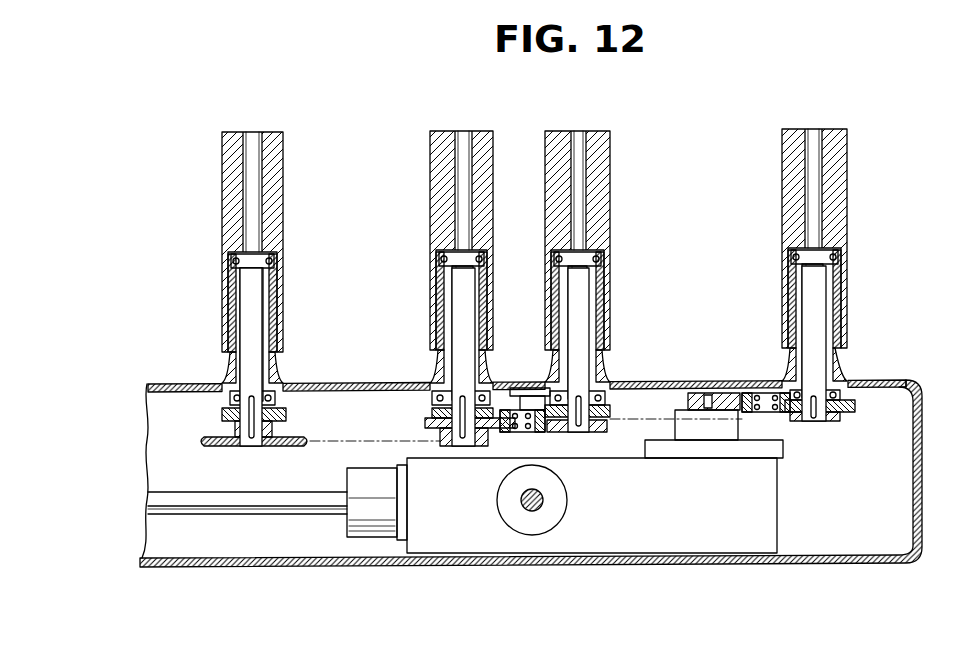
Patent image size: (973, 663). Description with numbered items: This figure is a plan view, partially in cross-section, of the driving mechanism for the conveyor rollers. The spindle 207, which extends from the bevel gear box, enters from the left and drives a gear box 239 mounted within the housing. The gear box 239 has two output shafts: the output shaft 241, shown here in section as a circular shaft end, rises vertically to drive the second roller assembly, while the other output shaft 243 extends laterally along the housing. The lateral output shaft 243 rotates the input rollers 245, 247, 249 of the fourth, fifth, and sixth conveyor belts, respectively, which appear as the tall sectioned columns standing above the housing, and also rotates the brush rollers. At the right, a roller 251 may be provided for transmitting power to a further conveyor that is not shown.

The spindle 207 is at (250, 505).
The gear box 239 is at (704, 518).
The output shaft 241 is at (543, 497).
The output shaft 243 is at (701, 392).
The input roller 245 is at (274, 204).
The input roller 247 is at (436, 158).
The input roller 249 is at (602, 153).
The roller 251 is at (832, 152).